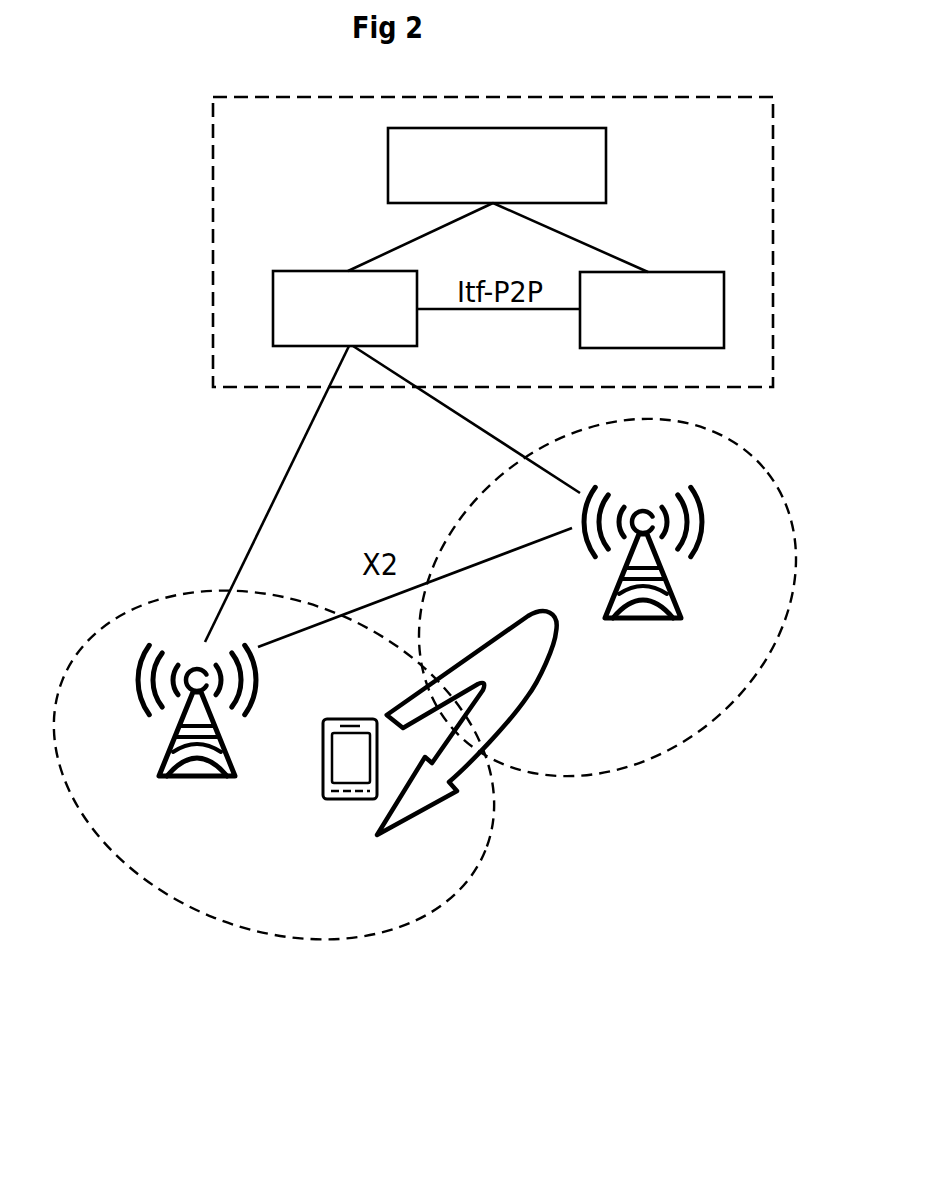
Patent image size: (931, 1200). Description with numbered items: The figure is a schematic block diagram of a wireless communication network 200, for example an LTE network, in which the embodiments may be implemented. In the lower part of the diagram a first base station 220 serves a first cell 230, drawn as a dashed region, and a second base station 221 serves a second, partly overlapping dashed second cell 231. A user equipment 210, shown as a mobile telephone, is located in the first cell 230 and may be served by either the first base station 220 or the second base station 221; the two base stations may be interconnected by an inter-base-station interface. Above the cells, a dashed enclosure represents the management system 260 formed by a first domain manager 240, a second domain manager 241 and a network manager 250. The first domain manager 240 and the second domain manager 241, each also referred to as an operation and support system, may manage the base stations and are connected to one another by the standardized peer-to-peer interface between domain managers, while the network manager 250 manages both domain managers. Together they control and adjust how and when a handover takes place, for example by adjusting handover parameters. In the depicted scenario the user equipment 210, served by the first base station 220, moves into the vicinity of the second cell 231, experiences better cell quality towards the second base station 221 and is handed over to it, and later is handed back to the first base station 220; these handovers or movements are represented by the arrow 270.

The wireless communication network 200 is at (192, 482).
The user equipment 210 is at (350, 781).
The first base station 220 is at (197, 737).
The second base station 221 is at (643, 580).
The first cell 230 is at (218, 917).
The second cell 231 is at (707, 722).
The first domain manager 240 is at (345, 308).
The second domain manager 241 is at (652, 310).
The network manager 250 is at (497, 165).
The network management system 260 is at (212, 241).
The arrow 270 is at (526, 700).